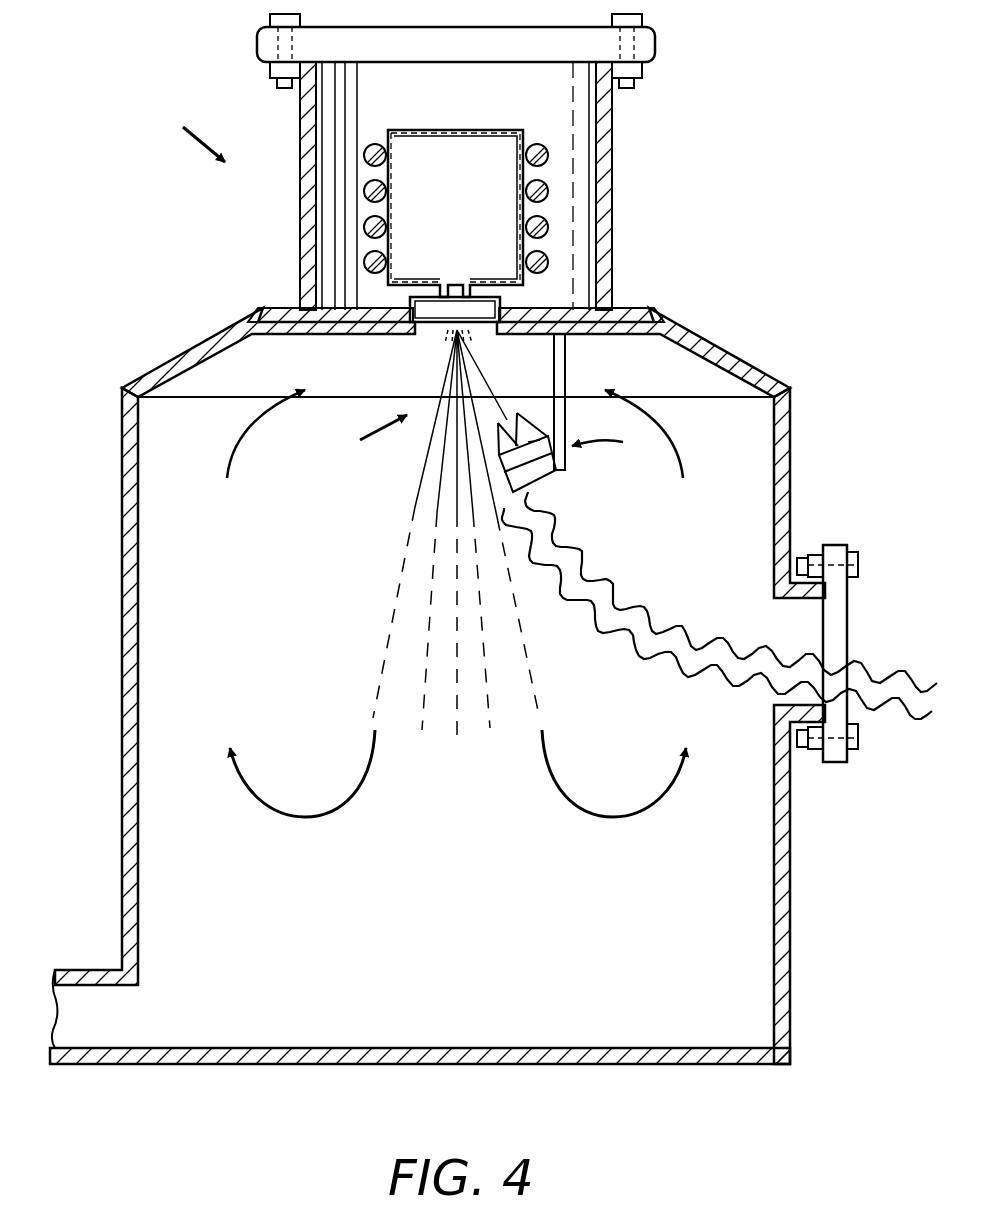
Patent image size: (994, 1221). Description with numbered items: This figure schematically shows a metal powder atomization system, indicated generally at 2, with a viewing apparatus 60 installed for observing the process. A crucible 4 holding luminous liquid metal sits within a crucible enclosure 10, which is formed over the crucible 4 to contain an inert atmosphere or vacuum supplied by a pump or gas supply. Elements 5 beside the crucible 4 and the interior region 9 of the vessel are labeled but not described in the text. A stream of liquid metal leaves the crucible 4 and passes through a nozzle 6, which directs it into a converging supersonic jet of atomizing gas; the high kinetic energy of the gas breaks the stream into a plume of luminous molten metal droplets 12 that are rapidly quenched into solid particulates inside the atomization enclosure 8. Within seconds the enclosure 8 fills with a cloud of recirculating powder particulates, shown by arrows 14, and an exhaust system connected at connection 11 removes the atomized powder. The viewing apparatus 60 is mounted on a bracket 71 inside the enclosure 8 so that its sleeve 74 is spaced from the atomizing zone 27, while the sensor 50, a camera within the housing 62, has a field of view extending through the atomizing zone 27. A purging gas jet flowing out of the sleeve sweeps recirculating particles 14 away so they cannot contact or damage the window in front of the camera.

The deposition apparatus 2 is at (186, 134).
The crucible 4 is at (525, 132).
The heater coils 5 is at (384, 143).
The nozzle 6 is at (502, 310).
The atomization enclosure 8 is at (791, 450).
The chamber interior 9 is at (282, 625).
The crucible enclosure 10 is at (611, 160).
The connection 11 is at (95, 968).
The plume of luminous molten metal droplets 12 is at (442, 335).
The recirculating powder particulates 14 is at (228, 455).
The atomizing zone 27 is at (364, 435).
The sensor 50 is at (512, 417).
The viewing apparatus 60 is at (617, 443).
The housing 62 is at (567, 472).
The bracket 71 is at (566, 370).
The sleeve 74 is at (542, 441).